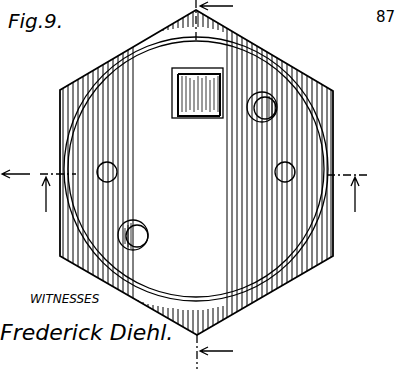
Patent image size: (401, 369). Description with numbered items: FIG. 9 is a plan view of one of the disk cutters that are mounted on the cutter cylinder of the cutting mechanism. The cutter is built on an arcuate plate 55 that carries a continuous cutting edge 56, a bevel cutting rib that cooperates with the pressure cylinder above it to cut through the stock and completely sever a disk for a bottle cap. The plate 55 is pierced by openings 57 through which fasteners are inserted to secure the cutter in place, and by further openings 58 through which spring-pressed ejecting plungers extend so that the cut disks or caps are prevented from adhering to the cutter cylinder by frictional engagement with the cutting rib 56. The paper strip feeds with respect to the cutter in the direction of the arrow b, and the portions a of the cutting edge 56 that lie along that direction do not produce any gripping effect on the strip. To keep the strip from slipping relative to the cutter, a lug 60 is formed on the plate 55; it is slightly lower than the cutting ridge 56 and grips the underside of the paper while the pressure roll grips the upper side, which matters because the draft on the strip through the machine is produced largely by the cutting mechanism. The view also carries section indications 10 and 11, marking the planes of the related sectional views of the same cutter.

The axis / section line 10 is at (218, 184).
The section line 11 is at (203, 198).
The portions of the cutting edge a is at (231, 39).
The arrow b is at (16, 184).
The arcuate plate 55 is at (196, 169).
The cutting edge 56 is at (272, 60).
The openings 57 is at (118, 170).
The openings 58 is at (256, 110).
The lug 60 is at (200, 108).